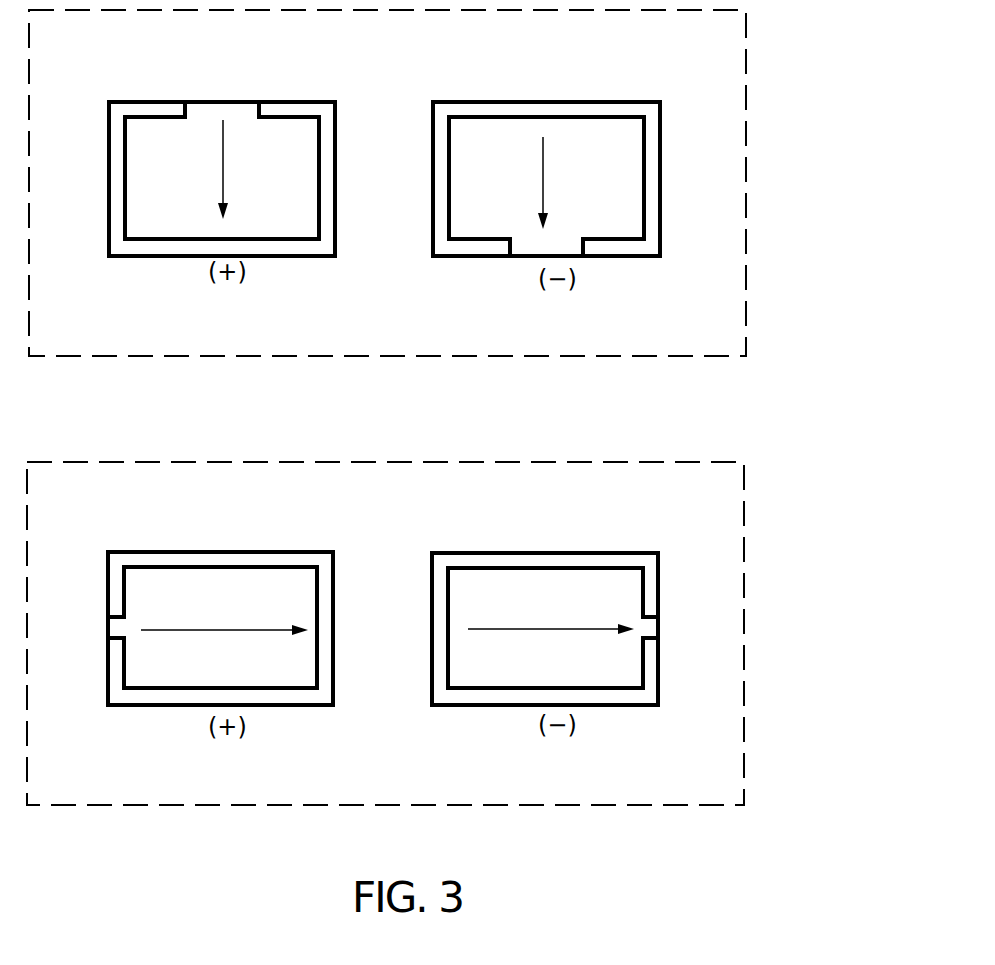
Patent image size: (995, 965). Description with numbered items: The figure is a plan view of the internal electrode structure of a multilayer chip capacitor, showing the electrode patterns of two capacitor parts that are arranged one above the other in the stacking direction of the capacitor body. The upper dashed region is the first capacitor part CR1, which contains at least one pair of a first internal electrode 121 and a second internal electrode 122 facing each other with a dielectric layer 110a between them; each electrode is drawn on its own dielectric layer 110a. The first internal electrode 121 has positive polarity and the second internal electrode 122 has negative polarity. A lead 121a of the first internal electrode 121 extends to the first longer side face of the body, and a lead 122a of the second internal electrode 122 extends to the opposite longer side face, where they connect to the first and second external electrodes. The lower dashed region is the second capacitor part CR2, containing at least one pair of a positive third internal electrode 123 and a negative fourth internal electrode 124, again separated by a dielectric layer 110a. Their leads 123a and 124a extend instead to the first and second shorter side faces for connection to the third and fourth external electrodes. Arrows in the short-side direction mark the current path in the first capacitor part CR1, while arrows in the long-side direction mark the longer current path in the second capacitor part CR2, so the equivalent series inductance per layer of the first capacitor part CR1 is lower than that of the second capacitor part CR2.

The dielectric layer 110a is at (308, 110).
The first internal electrode 121 is at (148, 133).
The lead of the first internal electrode 121a is at (238, 110).
The second internal electrode 122 is at (500, 128).
The lead of the second internal electrode 122a is at (535, 243).
The third internal electrode 123 is at (220, 585).
The lead of the third internal electrode 123a is at (117, 630).
The fourth internal electrode 124 is at (497, 585).
The lead of the fourth internal electrode 124a is at (653, 628).
The first capacitor part CR1 is at (746, 202).
The second capacitor part CR2 is at (744, 583).